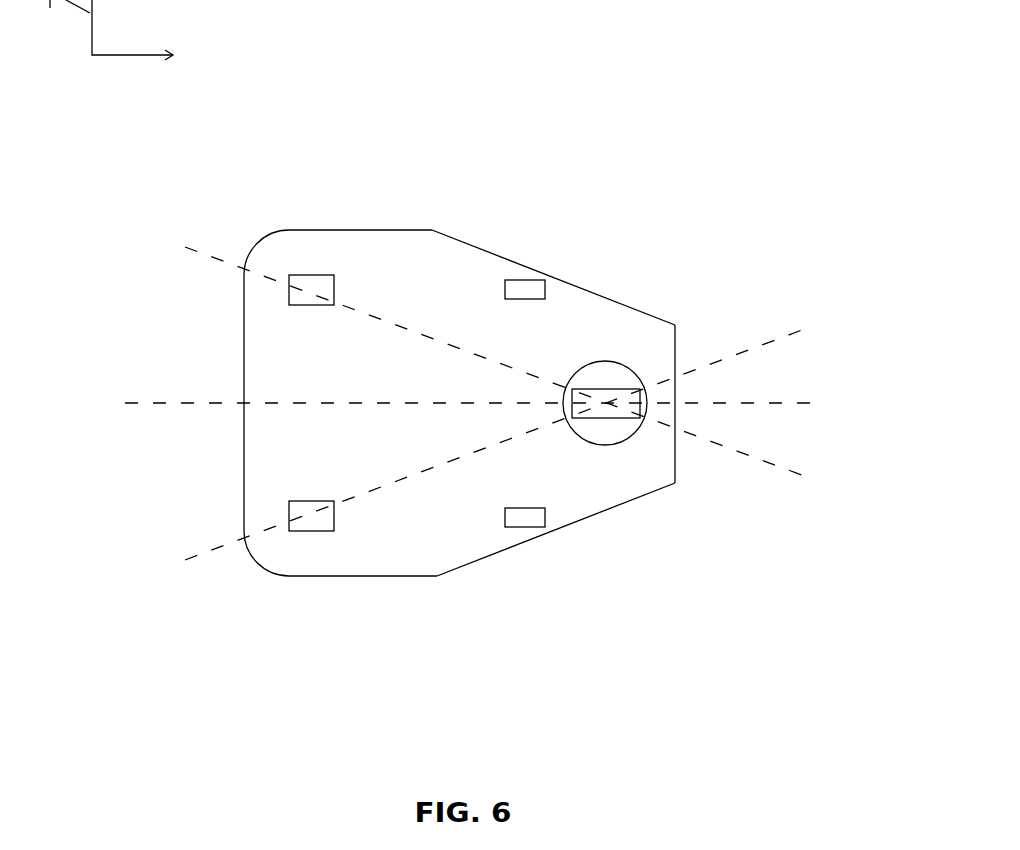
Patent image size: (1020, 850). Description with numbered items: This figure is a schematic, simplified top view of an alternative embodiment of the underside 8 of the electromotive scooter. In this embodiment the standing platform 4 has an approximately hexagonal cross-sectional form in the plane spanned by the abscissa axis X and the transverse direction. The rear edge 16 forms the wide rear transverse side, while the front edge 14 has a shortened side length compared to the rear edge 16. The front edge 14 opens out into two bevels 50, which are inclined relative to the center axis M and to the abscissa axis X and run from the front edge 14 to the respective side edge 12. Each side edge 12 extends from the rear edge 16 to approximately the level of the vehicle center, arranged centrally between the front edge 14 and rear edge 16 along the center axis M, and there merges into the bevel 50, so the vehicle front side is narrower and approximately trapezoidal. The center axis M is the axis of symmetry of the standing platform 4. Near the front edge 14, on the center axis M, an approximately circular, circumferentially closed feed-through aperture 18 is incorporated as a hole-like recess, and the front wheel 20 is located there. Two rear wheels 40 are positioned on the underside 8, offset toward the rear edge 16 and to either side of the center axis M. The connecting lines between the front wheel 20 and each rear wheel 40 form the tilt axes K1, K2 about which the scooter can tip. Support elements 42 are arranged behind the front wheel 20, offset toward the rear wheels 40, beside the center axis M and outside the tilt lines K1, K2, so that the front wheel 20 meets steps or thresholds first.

The standing platform 4 is at (451, 400).
The underside 8 is at (470, 268).
The side edge 12 is at (420, 228).
The front edge 14 is at (676, 464).
The rear edge 16 is at (243, 459).
The feed-through aperture 18 is at (606, 370).
The front wheel 20 is at (604, 417).
The rear wheel 40 is at (321, 286).
The support element 42 is at (523, 290).
The bevel 50 is at (612, 297).
The tilt axis K1 is at (221, 259).
The tilt axis K2 is at (222, 546).
The center axis M is at (788, 403).
The abscissa axis X is at (130, 60).